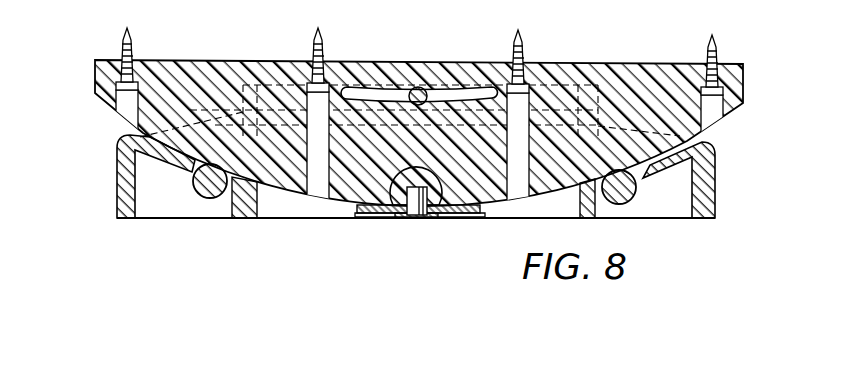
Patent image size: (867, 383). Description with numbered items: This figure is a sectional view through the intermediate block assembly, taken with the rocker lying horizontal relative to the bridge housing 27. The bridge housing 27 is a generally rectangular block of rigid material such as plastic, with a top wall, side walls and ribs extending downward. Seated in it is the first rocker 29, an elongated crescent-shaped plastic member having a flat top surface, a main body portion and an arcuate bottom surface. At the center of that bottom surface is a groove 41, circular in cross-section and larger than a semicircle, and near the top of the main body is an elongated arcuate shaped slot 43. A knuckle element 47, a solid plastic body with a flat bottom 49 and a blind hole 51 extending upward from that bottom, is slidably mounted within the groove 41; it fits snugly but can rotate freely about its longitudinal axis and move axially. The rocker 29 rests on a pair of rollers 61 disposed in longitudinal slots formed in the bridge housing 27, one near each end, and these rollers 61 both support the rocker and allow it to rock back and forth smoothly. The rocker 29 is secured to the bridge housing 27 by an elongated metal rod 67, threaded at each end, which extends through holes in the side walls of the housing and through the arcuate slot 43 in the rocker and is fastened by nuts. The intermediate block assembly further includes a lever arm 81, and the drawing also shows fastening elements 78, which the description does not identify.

The bridge housing 27 is at (117, 178).
The first rocker 29 is at (112, 105).
The groove 41 is at (368, 208).
The elongated arcuate shaped slot 43 is at (370, 86).
The knuckle element 47 is at (398, 200).
The flat bottom 49 is at (432, 215).
The blind hole 51 is at (422, 216).
The rollers 61 is at (195, 186).
The elongated metal rod 67 is at (419, 87).
The fastening pin 78 is at (131, 42).
The lever arm 81 is at (485, 213).